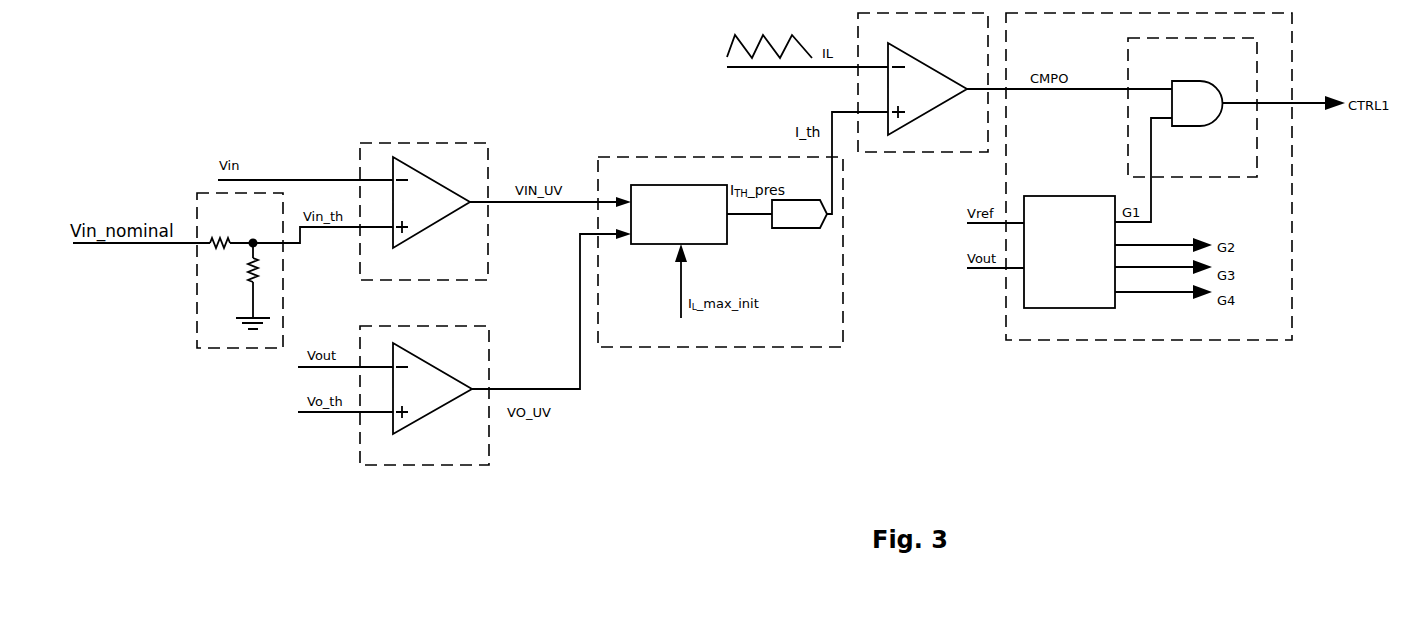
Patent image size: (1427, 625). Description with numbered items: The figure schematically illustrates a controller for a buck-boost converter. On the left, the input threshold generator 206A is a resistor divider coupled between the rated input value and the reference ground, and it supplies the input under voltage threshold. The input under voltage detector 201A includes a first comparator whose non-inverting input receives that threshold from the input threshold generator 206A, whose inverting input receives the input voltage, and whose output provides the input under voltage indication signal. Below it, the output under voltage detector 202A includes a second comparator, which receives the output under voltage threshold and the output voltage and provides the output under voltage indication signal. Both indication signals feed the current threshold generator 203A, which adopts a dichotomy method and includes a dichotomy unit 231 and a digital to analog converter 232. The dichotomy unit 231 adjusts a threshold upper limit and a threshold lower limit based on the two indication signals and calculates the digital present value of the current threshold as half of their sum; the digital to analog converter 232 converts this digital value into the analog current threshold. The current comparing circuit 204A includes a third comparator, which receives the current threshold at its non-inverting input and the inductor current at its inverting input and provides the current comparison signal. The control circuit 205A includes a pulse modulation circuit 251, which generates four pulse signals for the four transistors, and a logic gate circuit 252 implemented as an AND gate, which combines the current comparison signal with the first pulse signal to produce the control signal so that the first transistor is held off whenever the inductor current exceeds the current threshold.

The input under voltage detector 201A is at (375, 280).
The output under voltage detector 202A is at (375, 465).
The current threshold generator 203A is at (720, 268).
The current comparing circuit 204A is at (945, 153).
The control circuit 205A is at (1121, 192).
The input threshold generator 206A is at (243, 348).
The dichotomy unit 231 is at (667, 246).
The digital to analog converter (DAC) 232 is at (790, 229).
The pulse modulation circuit 251 is at (1069, 309).
The logic gate circuit 252 is at (1240, 178).